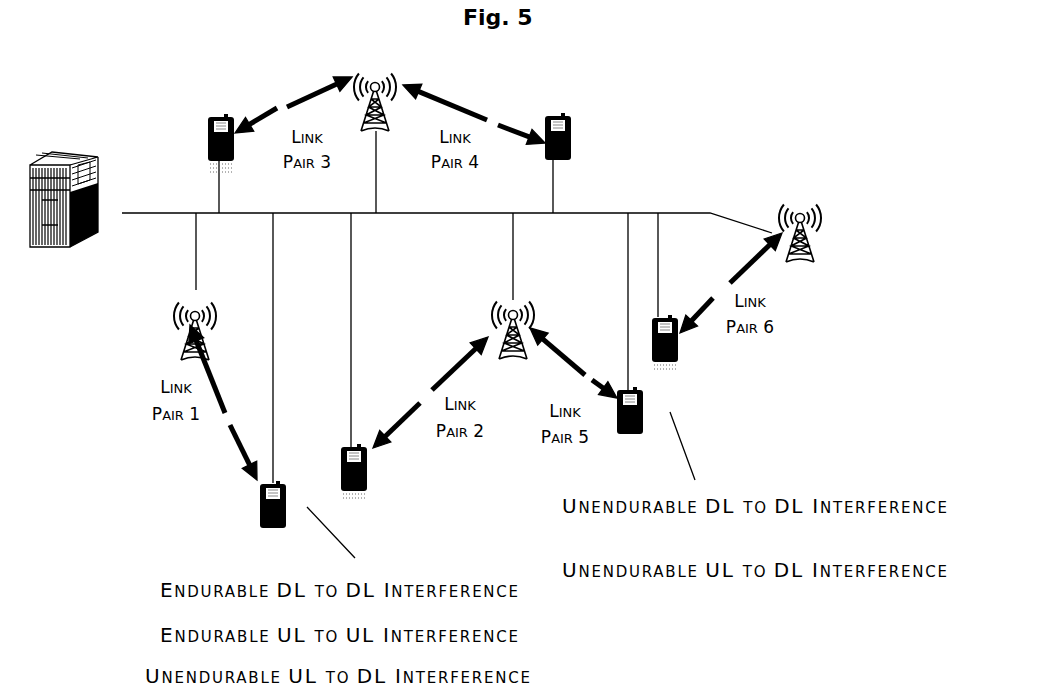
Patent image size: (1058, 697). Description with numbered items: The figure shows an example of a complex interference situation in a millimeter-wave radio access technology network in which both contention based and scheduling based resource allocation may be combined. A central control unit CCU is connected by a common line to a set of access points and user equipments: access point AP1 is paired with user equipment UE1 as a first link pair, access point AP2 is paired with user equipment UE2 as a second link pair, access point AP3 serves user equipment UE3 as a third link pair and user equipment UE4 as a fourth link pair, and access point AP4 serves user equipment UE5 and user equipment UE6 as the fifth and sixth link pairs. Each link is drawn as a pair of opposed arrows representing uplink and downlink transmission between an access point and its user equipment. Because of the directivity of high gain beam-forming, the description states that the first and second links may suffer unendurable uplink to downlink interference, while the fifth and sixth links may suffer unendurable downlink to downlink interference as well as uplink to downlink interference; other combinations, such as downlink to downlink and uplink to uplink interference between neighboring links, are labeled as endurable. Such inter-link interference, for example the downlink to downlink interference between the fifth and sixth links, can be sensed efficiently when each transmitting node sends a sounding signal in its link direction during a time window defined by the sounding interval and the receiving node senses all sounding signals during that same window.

The central control unit CCU is at (64, 183).
The access point 1 AP1 is at (170, 332).
The access point 2 AP2 is at (513, 348).
The access point 3 AP3 is at (375, 83).
The access point 4 AP4 is at (800, 215).
The user equipment 1 UE1 is at (262, 520).
The user equipment 2 UE2 is at (356, 480).
The user equipment 3 UE3 is at (223, 132).
The user equipment 4 UE4 is at (555, 125).
The user equipment 5 UE5 is at (633, 426).
The user equipment 6 UE6 is at (661, 351).